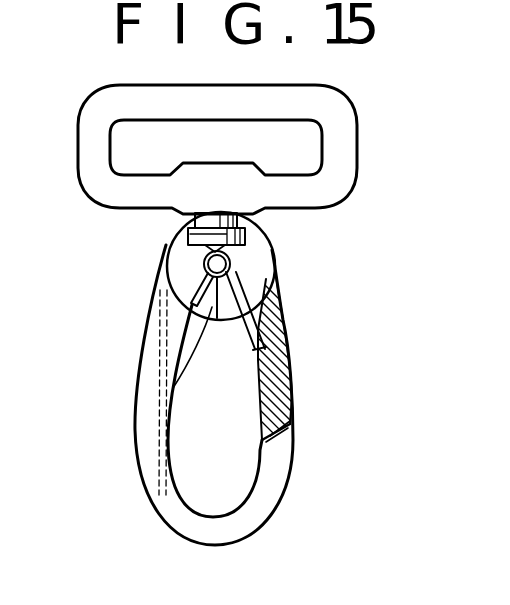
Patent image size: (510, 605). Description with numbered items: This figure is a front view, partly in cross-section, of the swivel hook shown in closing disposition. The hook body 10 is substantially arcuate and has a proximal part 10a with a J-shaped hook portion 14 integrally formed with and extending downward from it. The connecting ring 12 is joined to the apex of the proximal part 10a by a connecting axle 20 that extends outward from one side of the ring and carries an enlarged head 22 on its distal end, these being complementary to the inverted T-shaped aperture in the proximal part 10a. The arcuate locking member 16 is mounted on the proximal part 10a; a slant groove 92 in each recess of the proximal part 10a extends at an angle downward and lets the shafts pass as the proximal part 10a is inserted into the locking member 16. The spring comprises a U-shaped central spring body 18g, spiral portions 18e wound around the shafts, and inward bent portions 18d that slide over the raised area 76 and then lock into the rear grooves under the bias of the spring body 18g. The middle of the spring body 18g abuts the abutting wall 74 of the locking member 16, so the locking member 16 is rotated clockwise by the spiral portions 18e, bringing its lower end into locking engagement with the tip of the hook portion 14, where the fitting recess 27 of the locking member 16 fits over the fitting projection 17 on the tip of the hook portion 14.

The hook body 10 is at (144, 293).
The proximal part 10a is at (250, 232).
The connecting ring 12 is at (363, 151).
The J-shaped hook portion 14 is at (163, 482).
The locking member 16 is at (290, 394).
The fitting projection 17 is at (293, 443).
The inward bent portions 18d is at (120, 392).
The spiral portions 18e is at (235, 267).
The U-shaped central spring body 18g is at (288, 348).
The connecting axle 20 is at (194, 221).
The enlarged head 22 is at (190, 246).
The fitting recess 27 is at (288, 418).
The abutment 74 is at (288, 356).
The raised area 76 is at (170, 394).
The slant groove 92 is at (252, 290).